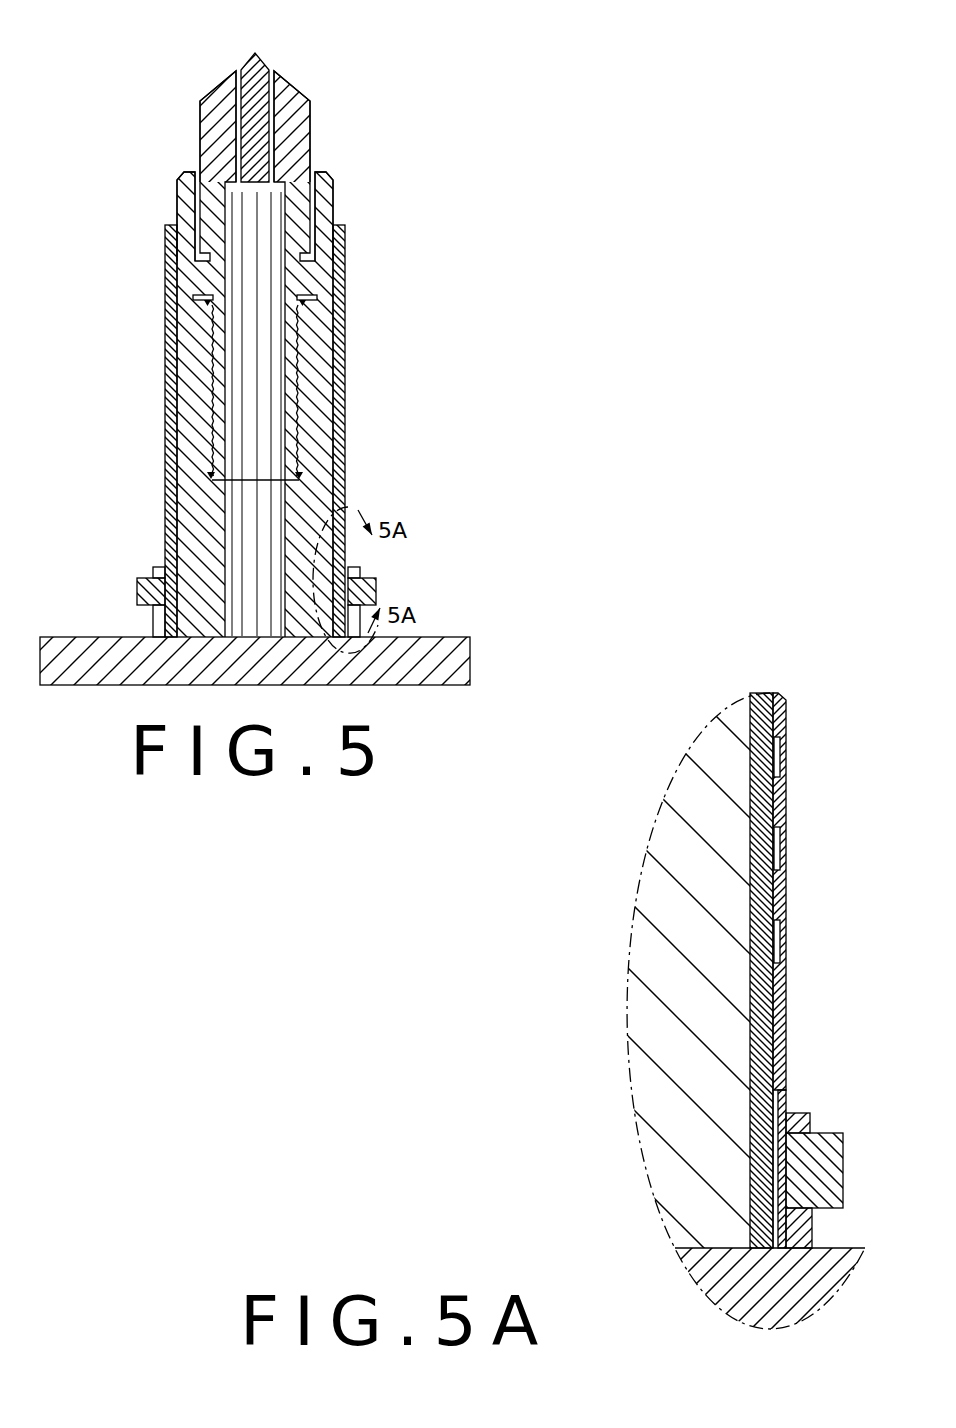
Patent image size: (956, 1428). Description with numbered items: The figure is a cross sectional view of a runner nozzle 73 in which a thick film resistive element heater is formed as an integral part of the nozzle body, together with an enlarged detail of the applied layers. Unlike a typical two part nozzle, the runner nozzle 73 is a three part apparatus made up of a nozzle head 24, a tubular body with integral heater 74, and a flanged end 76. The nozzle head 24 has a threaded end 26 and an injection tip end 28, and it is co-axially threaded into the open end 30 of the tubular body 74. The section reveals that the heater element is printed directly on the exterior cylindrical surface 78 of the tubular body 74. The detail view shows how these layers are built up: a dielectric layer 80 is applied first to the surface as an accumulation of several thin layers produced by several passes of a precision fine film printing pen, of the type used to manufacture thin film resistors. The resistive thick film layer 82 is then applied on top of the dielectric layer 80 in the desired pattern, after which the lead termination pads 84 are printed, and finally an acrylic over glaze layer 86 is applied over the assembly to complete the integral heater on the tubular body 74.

In FIG. 5, the nozzle head 24 is at (210, 236).
In FIG. 5, the threaded end 26 is at (210, 388).
In FIG. 5, the injection tip end 28 is at (249, 54).
In FIG. 5, the open end 30 is at (300, 211).
In FIG. 5, the runner nozzle 73 is at (130, 447).
In FIG. 5, the tubular body with integral heater 74 is at (345, 459).
In FIG. 5, the flanged end 76 is at (470, 662).
In FIG. 5, the exterior cylindrical surface 78 is at (334, 187).
In FIG. 5A, the dielectric layer 80 is at (788, 980).
In FIG. 5A, the resistive thick film layer 82 is at (785, 1020).
In FIG. 5A, the lead termination pads 84 is at (798, 1118).
In FIG. 5A, the acrylic over glaze layer 86 is at (787, 1064).